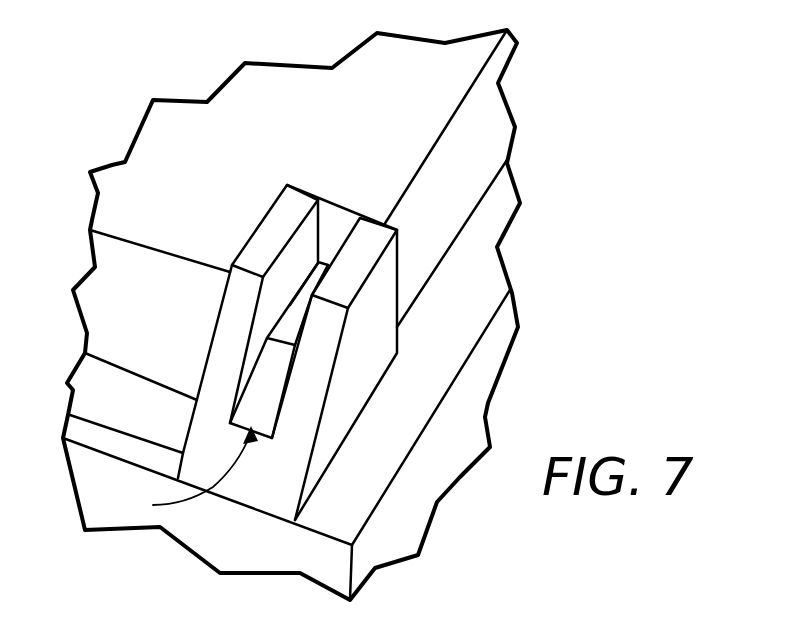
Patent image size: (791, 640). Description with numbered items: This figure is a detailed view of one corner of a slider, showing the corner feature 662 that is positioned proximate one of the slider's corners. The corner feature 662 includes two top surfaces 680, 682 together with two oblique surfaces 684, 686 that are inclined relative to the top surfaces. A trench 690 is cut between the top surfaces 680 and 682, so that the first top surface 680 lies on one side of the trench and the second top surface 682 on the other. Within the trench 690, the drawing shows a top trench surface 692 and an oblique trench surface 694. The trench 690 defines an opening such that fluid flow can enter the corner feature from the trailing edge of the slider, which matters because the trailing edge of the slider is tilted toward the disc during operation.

The corner feature 662 is at (262, 205).
The top surface 680 is at (265, 238).
The top surface 682 is at (370, 251).
The oblique surface 684 is at (222, 343).
The oblique surface 686 is at (317, 373).
The trench 690 is at (181, 472).
The top trench surface 692 is at (290, 323).
The oblique trench surface 694 is at (260, 398).